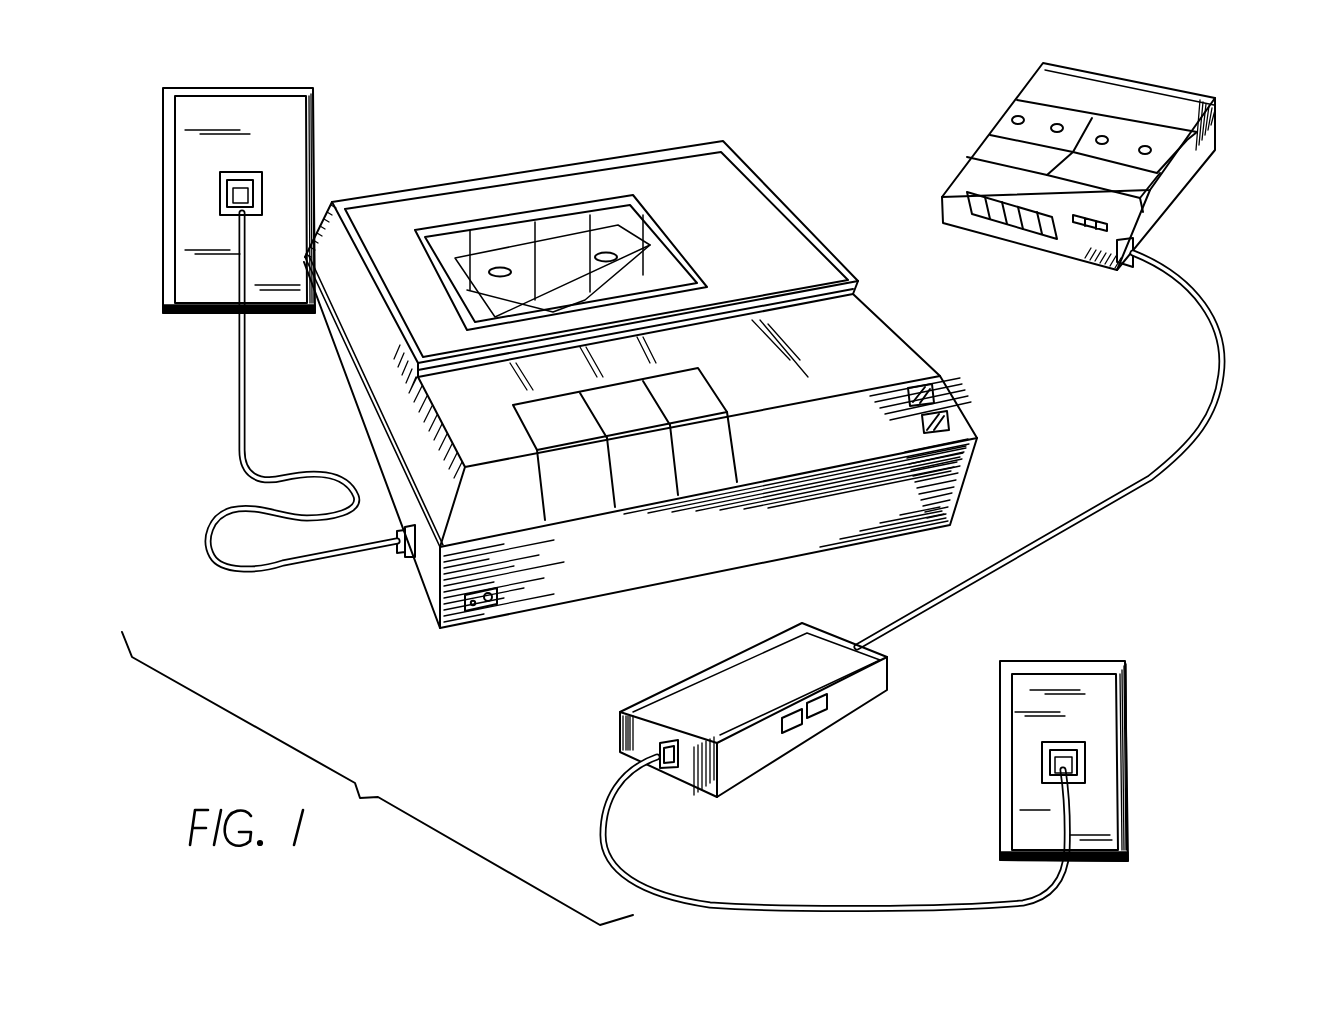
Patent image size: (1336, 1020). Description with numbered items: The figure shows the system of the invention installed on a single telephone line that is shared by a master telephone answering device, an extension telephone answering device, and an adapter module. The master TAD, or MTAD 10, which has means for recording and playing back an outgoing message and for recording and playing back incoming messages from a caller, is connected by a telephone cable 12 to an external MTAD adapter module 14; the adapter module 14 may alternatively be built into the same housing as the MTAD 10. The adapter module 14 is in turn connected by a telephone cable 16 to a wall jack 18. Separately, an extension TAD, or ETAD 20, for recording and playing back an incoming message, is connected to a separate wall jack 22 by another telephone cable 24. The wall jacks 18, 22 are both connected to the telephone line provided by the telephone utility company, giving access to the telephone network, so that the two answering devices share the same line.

The master TAD 10 is at (1187, 73).
The telephone cable 12 is at (1213, 410).
The MTAD adapter module 14 is at (628, 698).
The telephone cable 16 is at (860, 897).
The wall jack 18 is at (1088, 758).
The extension TAD 20 is at (695, 187).
The wall jack 22 is at (260, 173).
The telephone cable 24 is at (240, 572).